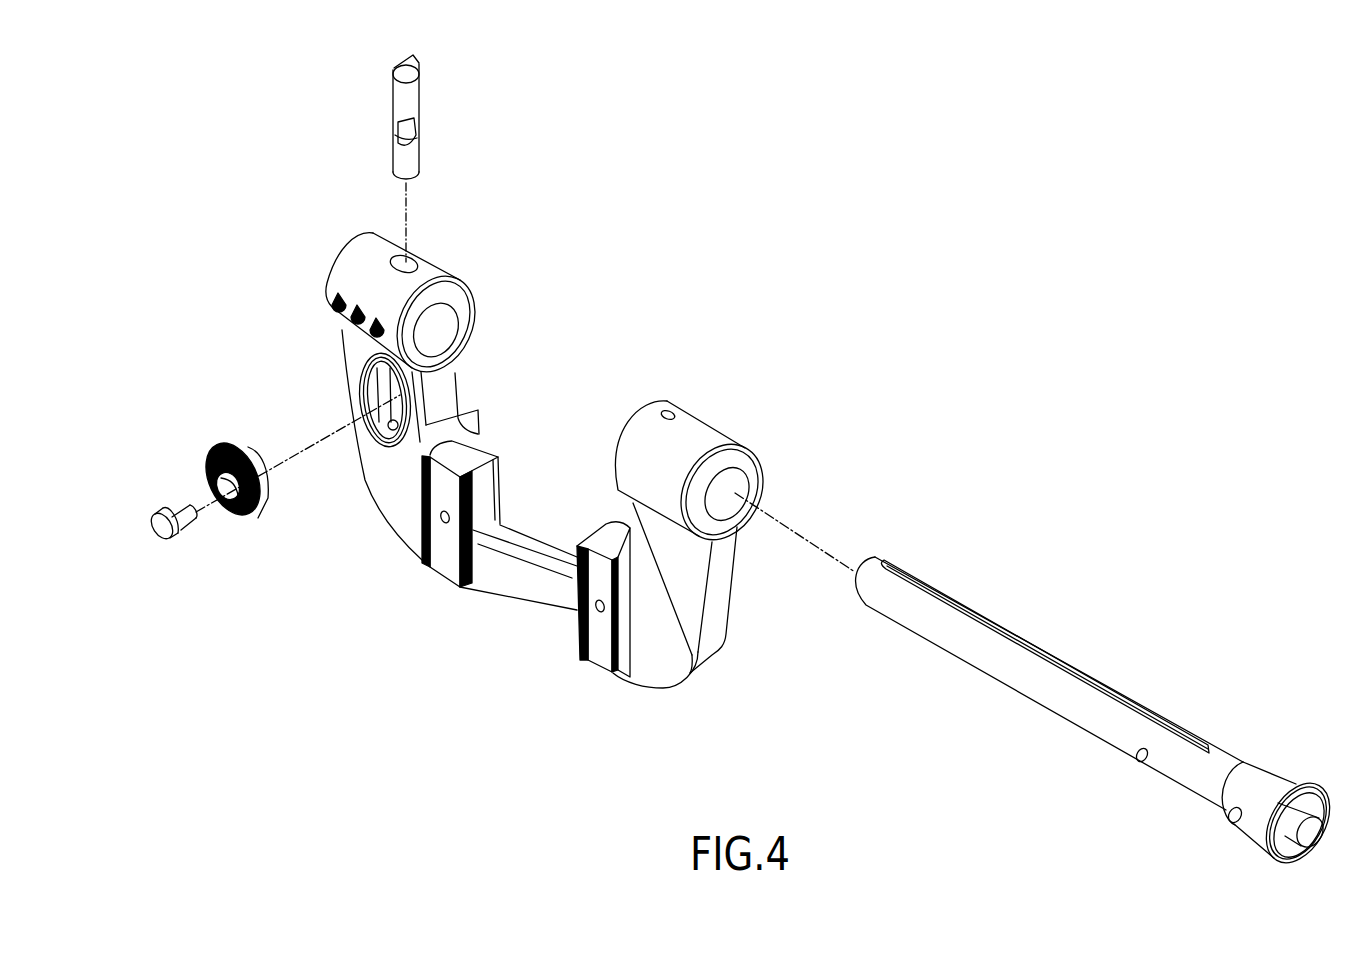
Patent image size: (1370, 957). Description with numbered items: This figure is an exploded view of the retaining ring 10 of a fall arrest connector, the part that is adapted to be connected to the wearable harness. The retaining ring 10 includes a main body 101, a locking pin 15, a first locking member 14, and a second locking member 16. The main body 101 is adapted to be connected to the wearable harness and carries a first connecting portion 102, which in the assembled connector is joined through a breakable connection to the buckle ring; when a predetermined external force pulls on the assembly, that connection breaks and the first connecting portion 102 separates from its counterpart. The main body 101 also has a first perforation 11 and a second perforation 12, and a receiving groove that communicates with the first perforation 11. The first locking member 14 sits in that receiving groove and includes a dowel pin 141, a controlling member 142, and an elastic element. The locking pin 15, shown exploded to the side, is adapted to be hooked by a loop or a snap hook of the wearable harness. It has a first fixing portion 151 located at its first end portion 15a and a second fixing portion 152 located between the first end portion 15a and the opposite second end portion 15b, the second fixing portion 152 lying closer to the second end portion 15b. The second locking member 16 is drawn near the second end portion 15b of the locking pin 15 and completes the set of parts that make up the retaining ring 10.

The retaining ring 10 is at (252, 103).
The main body 101 is at (575, 343).
The first connecting portion 102 is at (447, 563).
The first perforation 11 is at (443, 318).
The second perforation 12 is at (733, 481).
The first locking member 14 is at (263, 171).
The dowel pin 141 is at (402, 108).
The controlling member 142 is at (223, 445).
The locking pin 15 is at (1017, 602).
The first end portion 15a is at (876, 556).
The second end portion 15b is at (1266, 771).
The first fixing portion 151 is at (913, 632).
The second fixing portion 152 is at (1135, 763).
The second locking member 16 is at (1314, 834).